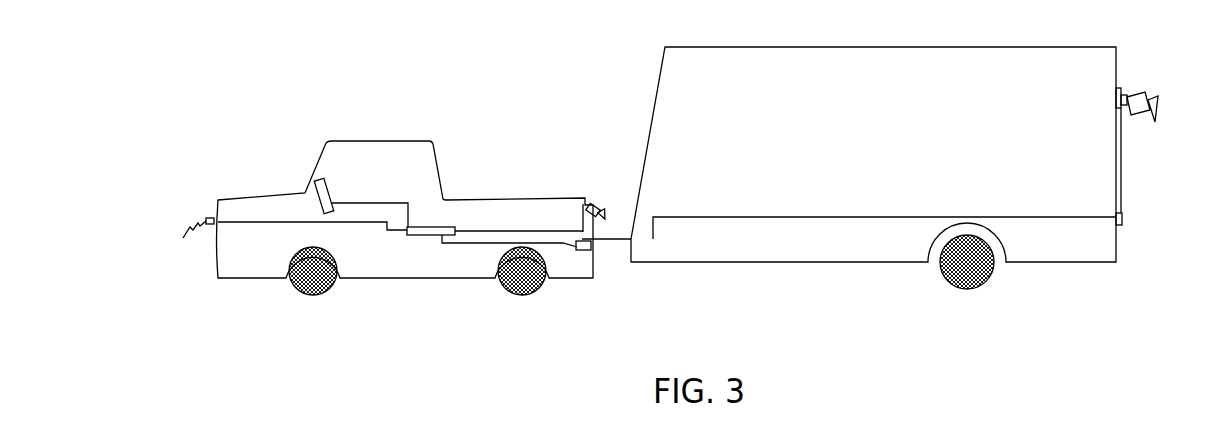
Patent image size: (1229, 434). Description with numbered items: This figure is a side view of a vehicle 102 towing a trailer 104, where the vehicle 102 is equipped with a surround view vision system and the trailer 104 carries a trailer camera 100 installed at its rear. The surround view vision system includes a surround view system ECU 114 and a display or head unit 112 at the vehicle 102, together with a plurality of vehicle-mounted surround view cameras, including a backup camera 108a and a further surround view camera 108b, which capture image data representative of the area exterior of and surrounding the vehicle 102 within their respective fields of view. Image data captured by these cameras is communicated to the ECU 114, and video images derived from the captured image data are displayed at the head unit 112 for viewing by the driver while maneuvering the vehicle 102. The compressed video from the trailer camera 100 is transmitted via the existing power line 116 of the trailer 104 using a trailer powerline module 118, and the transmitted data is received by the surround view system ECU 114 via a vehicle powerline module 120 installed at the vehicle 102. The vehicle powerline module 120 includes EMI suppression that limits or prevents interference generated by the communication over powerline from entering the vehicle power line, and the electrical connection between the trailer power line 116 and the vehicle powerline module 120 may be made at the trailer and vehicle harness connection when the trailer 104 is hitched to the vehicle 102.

The trailer camera 100 is at (1143, 95).
The vehicle 102 is at (238, 207).
The trailer 104 is at (1035, 75).
The backup camera 108a is at (178, 248).
The surround view camera 108b is at (598, 205).
The head unit 112 is at (331, 189).
The surround view system ECU 114 is at (445, 227).
The existing power line in the trailer 116 is at (813, 215).
The trailer powerline module 118 is at (1122, 217).
The vehicle powerline module 120 is at (592, 250).